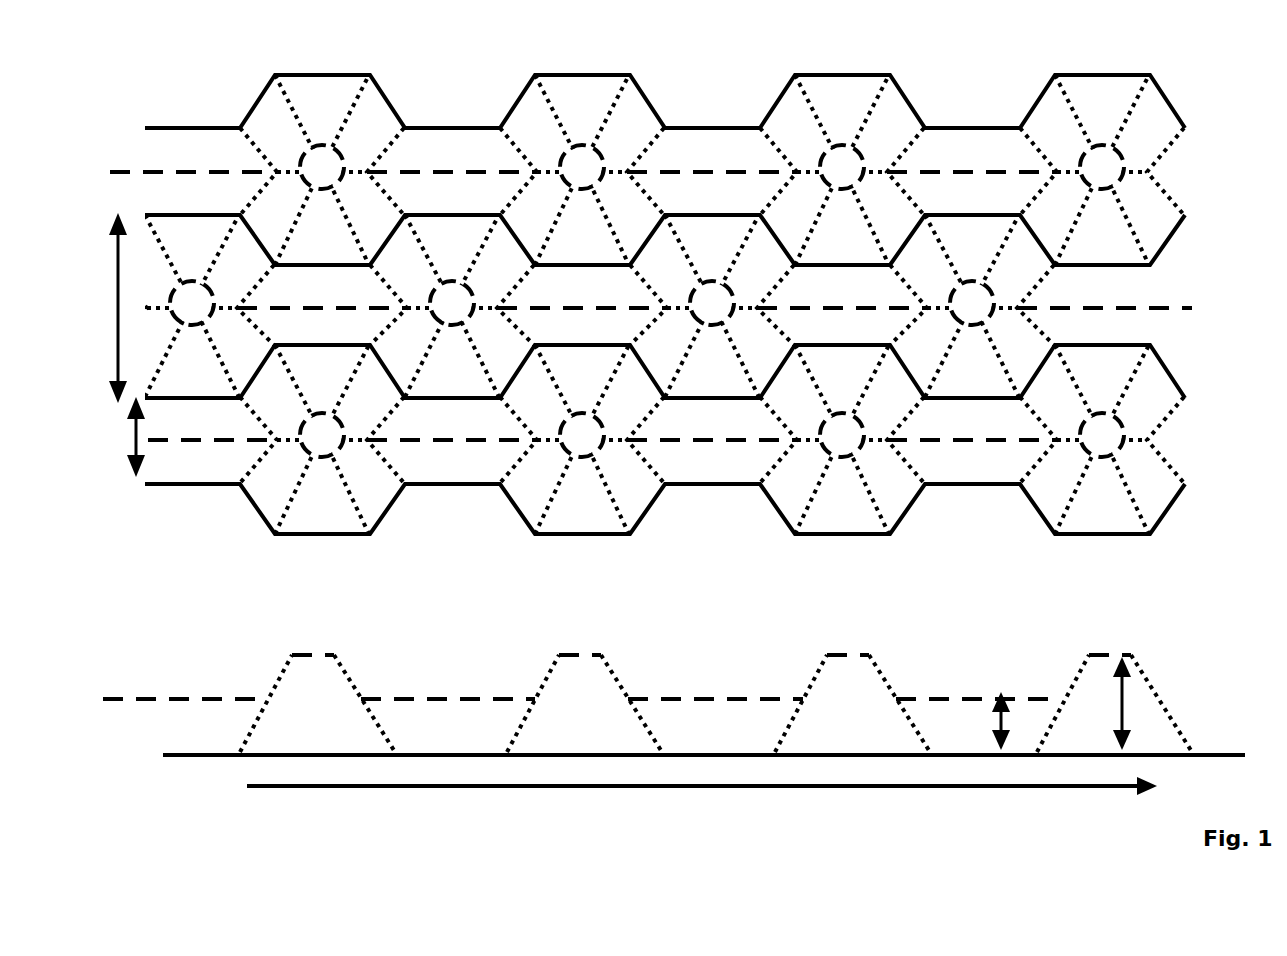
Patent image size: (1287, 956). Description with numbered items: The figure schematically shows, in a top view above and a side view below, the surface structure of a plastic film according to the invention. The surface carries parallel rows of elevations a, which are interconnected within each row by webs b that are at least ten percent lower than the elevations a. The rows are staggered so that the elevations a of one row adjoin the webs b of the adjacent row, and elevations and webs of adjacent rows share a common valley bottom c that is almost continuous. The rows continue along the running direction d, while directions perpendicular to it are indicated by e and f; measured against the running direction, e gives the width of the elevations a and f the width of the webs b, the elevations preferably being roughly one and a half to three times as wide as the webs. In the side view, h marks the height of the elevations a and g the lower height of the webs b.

The elevations a is at (448, 362).
The webs b is at (578, 340).
The common valley bottom c is at (861, 300).
The running direction d is at (702, 807).
The width of the elevations against the running direction e is at (107, 308).
The width of the webs against the running direction f is at (127, 437).
The height of the webs g is at (991, 721).
The height of the elevations h is at (1112, 703).